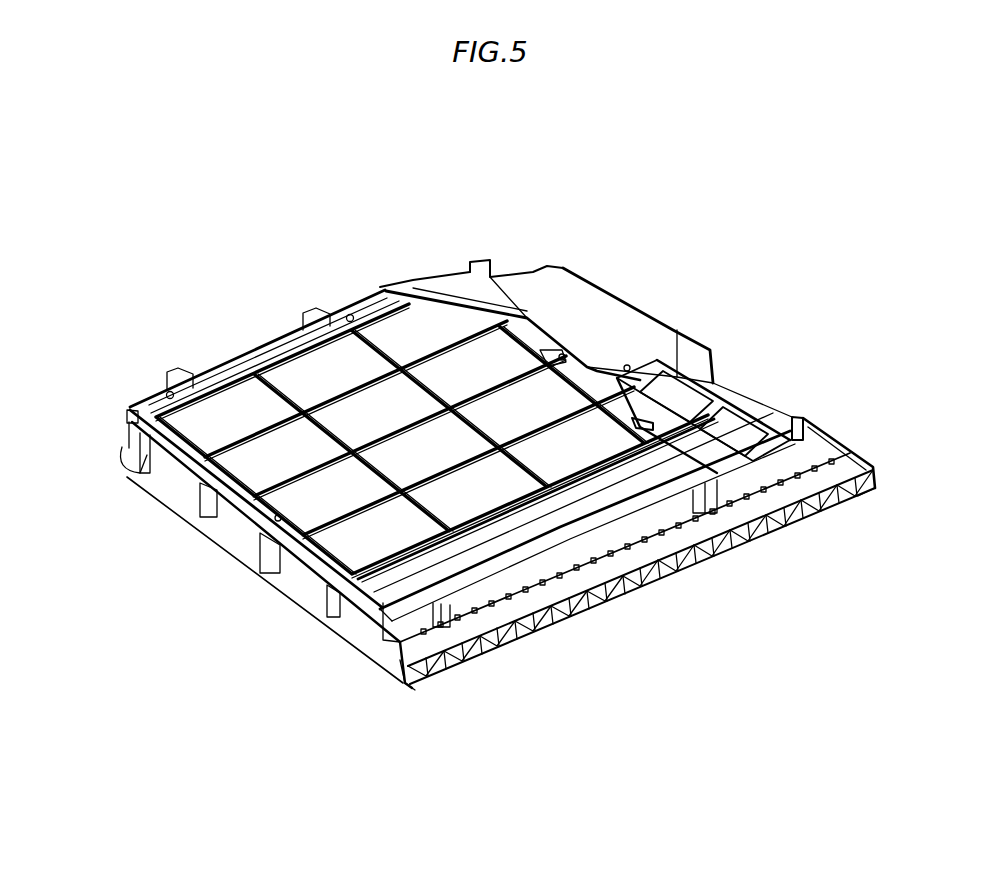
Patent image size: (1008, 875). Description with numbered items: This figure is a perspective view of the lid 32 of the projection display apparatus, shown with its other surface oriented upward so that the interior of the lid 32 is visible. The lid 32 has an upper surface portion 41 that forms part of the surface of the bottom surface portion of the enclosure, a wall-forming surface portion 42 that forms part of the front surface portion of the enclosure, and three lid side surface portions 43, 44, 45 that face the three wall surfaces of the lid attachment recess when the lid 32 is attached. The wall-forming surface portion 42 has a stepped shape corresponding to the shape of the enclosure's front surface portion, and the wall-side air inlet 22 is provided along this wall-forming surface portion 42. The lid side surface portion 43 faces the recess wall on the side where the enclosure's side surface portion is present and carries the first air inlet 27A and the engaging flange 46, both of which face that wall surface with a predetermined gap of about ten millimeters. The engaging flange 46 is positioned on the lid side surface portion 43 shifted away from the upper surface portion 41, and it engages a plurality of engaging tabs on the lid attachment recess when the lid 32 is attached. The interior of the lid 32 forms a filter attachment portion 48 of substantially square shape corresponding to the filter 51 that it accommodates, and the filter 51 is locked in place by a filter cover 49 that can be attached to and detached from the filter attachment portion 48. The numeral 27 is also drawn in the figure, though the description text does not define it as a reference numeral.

The lid 32 is at (676, 243).
The wall-side air inlet 22 is at (620, 605).
The side wall 27 is at (300, 590).
The first air inlet 27A is at (215, 518).
The upper surface portion 41 is at (175, 505).
The wall-forming surface portion 42 is at (407, 690).
The lid side surface portion 43 is at (385, 665).
The lid side surface portion 44 is at (265, 330).
The lid side surface portion 45 is at (718, 355).
The engaging flange 46 is at (160, 440).
The filter attachment portion 48 is at (460, 300).
The filter cover 49 is at (393, 310).
The filter 51 is at (232, 405).